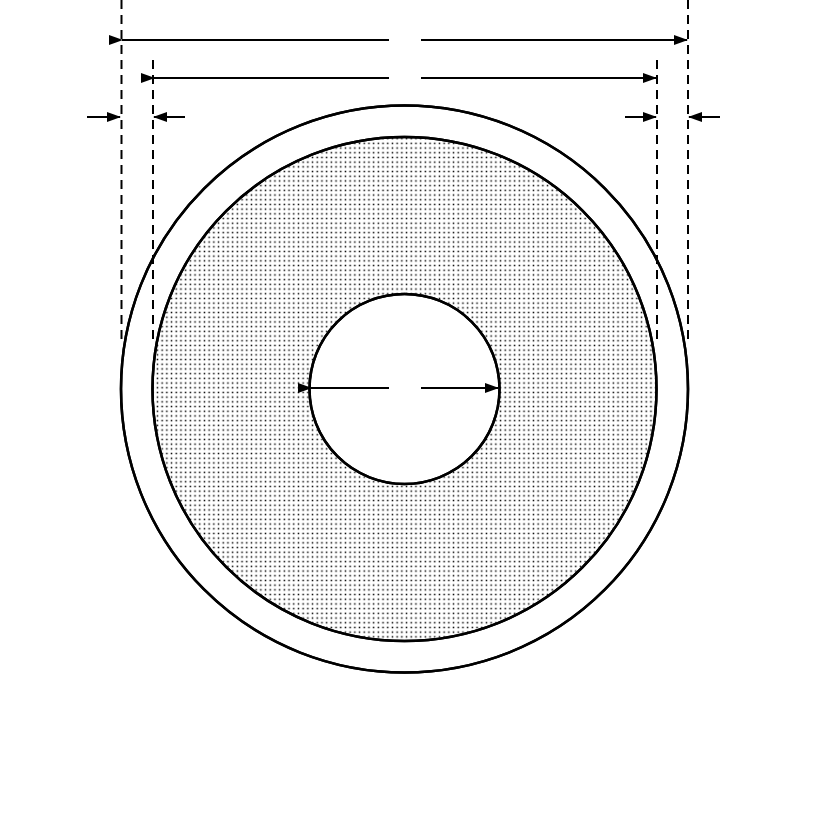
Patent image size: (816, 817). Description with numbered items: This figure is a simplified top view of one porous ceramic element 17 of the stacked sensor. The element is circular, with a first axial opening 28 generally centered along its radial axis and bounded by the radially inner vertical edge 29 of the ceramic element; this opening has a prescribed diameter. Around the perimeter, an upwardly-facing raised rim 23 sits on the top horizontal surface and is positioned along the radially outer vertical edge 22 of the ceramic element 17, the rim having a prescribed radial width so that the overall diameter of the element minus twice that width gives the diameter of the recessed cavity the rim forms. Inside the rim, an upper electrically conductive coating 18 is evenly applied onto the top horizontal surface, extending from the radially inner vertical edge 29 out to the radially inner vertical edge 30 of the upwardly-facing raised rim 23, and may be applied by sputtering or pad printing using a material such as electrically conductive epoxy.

The porous ceramic element 17 is at (93, 220).
The upper electrically conductive coating 18 is at (393, 238).
The radially outer vertical edge 22 is at (133, 485).
The upwardly-facing raised rim 23 is at (137, 427).
The first axial opening 28 is at (393, 358).
The radially inner vertical edge 29 is at (338, 452).
The radially inner vertical edge of the upwardly-facing raised rim 30 is at (200, 540).